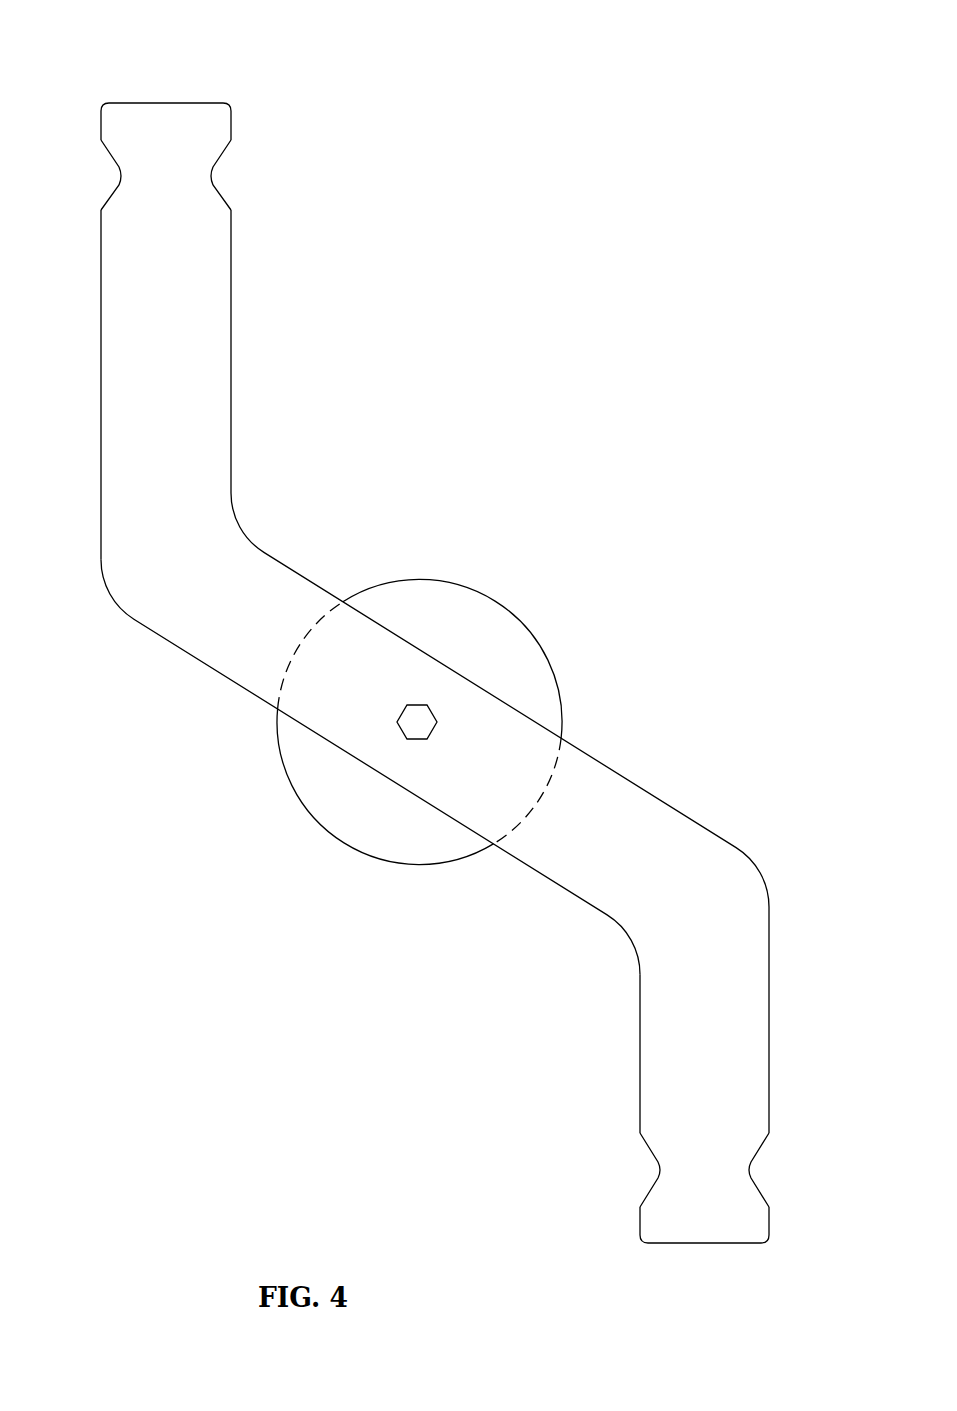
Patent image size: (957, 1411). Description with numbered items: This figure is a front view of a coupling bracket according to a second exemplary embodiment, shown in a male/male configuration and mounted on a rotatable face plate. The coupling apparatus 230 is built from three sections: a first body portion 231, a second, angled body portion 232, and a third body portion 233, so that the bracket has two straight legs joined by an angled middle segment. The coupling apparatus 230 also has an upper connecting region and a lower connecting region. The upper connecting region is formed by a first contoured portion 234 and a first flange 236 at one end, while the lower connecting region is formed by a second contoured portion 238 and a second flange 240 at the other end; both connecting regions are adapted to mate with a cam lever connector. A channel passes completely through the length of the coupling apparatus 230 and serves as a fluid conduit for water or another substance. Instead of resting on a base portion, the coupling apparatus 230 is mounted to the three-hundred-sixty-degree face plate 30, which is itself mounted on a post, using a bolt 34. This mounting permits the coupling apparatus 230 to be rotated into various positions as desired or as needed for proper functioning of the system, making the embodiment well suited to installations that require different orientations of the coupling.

The coupling apparatus 230 is at (411, 653).
The first body portion 231 is at (195, 378).
The second (angled) body portion 232 is at (628, 862).
The third body portion 233 is at (732, 1070).
The first contoured portion 234 is at (211, 173).
The first flange 236 is at (157, 103).
The second contoured portion 238 is at (657, 1167).
The second flange 240 is at (688, 1243).
The 360° face plate 30 is at (483, 594).
The bolt 34 is at (408, 738).